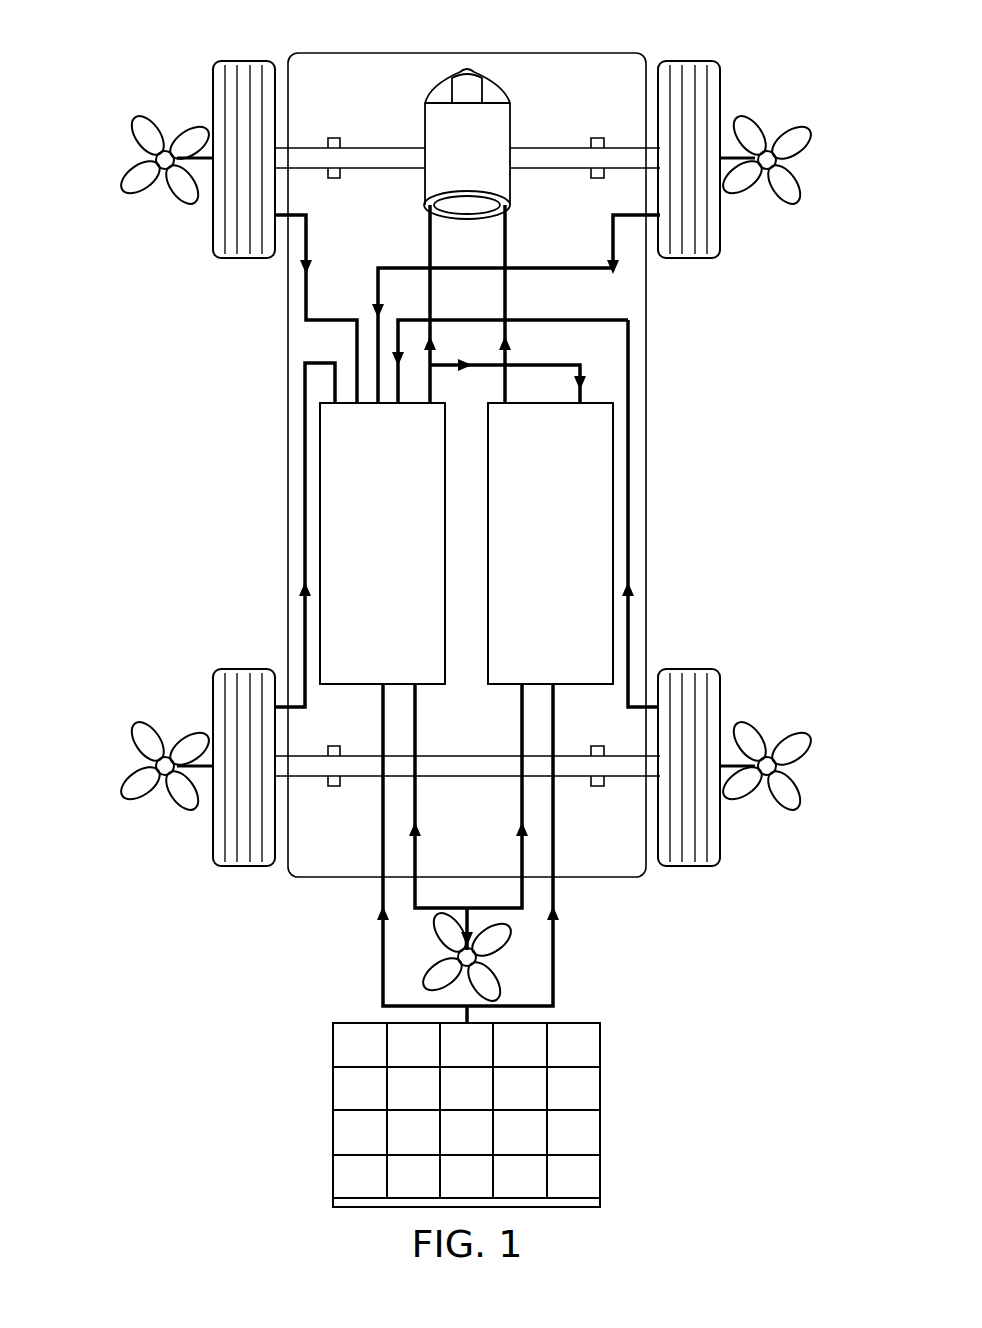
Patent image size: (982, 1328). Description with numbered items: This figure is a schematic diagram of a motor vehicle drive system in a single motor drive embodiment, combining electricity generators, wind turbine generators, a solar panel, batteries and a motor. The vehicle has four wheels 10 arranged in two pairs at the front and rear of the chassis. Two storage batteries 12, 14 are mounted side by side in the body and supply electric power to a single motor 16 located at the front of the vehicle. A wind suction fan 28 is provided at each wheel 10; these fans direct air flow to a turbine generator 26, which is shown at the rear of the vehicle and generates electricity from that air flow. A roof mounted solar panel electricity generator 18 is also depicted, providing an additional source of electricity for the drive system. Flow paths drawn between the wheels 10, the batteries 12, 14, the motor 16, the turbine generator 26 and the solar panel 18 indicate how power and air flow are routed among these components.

The wheel 10 is at (235, 258).
The storage battery 12 is at (320, 450).
The storage battery 14 is at (615, 452).
The motor 16 is at (483, 75).
The solar panel electricity generator 18 is at (602, 1085).
The turbine generator 26 is at (512, 980).
The wind suction fan 28 is at (140, 120).